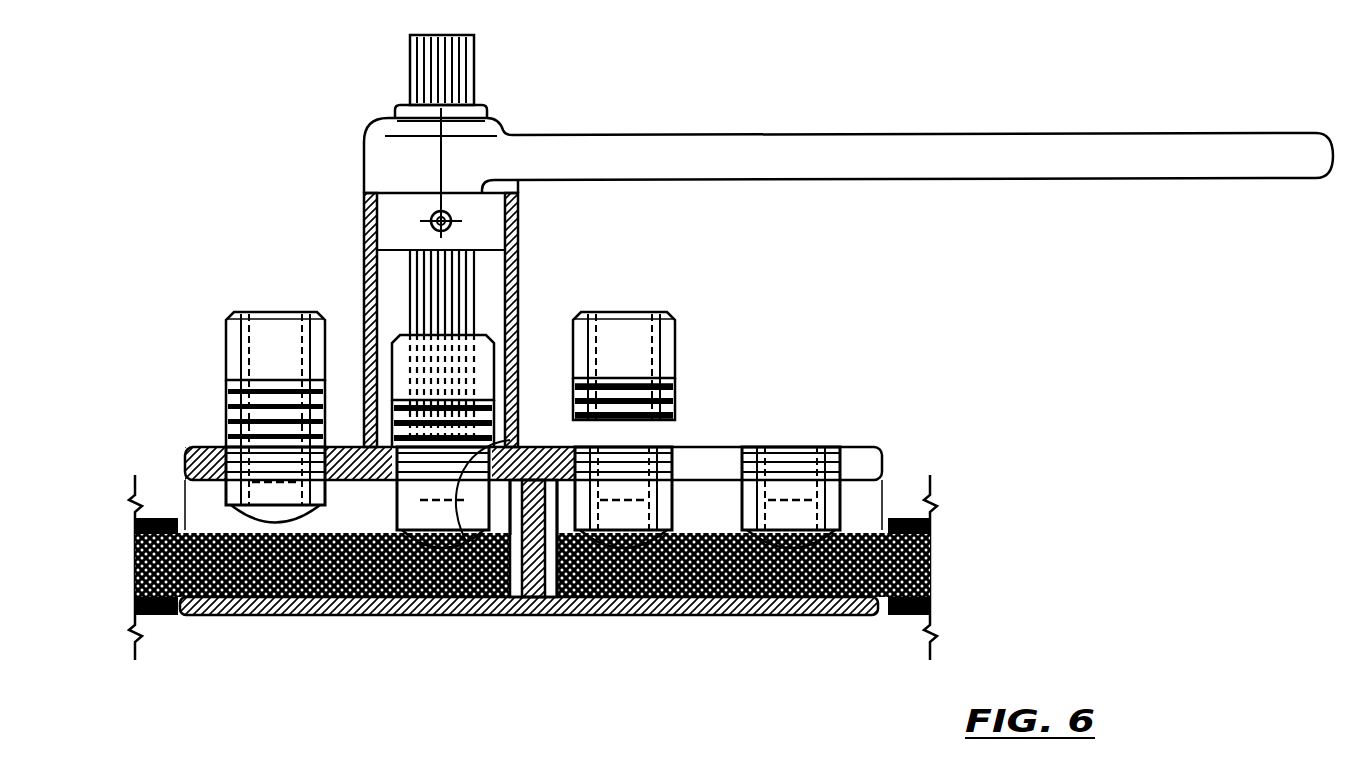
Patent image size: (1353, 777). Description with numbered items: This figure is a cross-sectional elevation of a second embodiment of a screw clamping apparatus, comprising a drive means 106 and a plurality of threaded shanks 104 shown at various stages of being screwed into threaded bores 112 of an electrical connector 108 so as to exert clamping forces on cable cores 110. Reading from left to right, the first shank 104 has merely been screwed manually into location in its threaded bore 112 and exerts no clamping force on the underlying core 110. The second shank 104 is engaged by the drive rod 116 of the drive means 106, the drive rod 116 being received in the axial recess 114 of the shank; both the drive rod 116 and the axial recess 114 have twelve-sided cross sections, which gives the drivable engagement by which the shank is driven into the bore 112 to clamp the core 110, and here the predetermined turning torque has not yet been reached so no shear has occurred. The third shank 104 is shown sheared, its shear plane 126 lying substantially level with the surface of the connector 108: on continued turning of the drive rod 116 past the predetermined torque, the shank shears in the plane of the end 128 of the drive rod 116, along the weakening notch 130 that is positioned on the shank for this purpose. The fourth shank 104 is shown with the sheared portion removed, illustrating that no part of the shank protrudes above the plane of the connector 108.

The shank 104 is at (230, 340).
The drive means 106 is at (365, 205).
The electrical connector 108 is at (562, 615).
The cable core 110 is at (292, 615).
The threaded bore 112 is at (202, 445).
The axial recess 114 is at (497, 615).
The drive rod 116 is at (400, 285).
The shear plane 126 is at (628, 447).
The end of the drive rod 128 is at (510, 440).
The weakening notch 130 is at (660, 398).